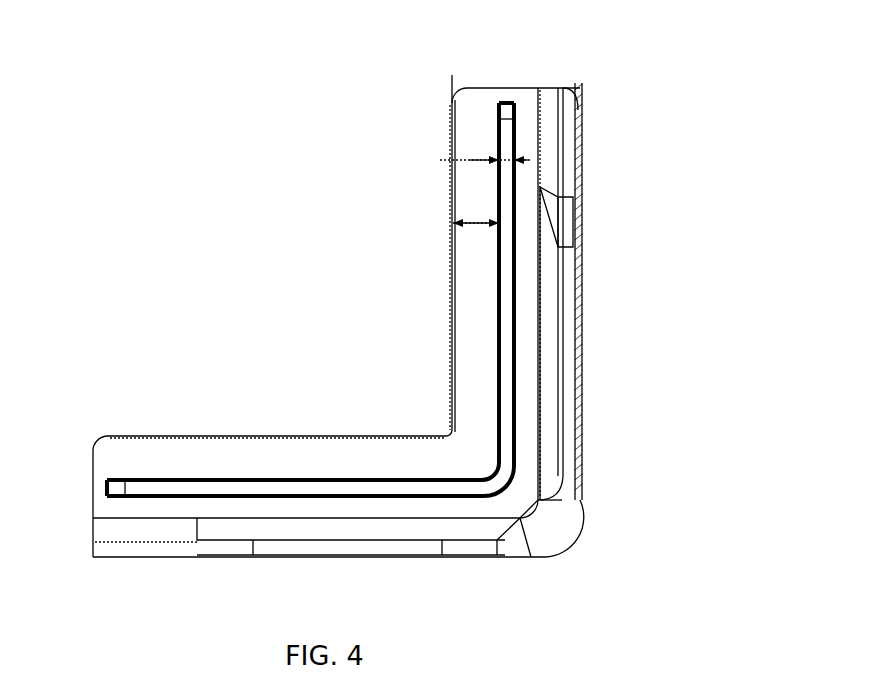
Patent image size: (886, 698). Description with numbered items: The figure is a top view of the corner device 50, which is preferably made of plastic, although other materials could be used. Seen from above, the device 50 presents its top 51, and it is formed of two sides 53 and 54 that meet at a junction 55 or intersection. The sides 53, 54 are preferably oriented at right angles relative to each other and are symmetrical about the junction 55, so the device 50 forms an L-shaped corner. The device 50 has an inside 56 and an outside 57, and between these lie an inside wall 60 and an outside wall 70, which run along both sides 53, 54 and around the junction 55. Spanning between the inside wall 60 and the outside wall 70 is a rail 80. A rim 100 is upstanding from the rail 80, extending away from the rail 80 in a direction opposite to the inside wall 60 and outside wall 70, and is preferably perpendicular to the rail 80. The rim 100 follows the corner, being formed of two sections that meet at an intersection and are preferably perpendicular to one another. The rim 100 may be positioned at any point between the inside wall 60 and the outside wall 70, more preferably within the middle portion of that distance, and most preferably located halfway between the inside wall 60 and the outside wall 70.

The corner device 50 is at (605, 101).
The top 51 is at (187, 485).
The side 53 is at (98, 440).
The side 54 is at (518, 88).
The junction 55 is at (567, 545).
The inside 56 is at (270, 437).
The outside 57 is at (578, 353).
The inside wall 60 is at (450, 337).
The outside wall 70 is at (580, 170).
The rail 80 is at (482, 115).
The rim 100 is at (509, 213).